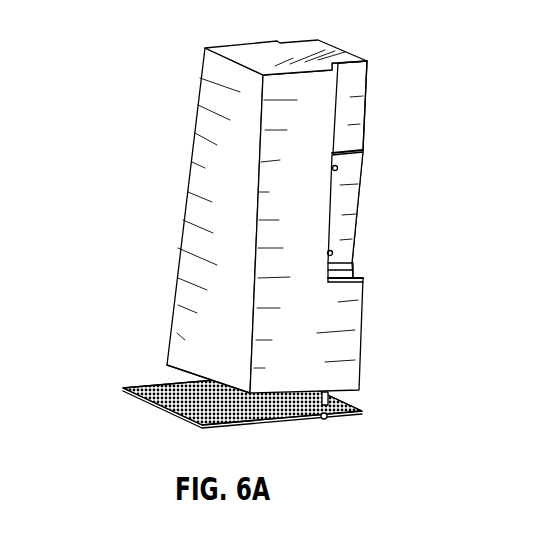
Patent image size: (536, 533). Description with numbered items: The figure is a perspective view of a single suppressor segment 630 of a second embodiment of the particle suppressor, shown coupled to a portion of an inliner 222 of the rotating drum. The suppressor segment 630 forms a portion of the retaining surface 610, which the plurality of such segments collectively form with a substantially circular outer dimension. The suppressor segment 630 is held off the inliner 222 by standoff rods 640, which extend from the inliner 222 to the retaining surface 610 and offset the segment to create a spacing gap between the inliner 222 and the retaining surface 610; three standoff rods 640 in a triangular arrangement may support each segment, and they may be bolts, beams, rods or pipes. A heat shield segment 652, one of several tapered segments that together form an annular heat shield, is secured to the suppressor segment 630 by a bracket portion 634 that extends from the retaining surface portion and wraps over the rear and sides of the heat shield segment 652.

The suppressor segment 630 is at (254, 232).
The heat shield segment 652 is at (353, 106).
The bracket portion 634 is at (353, 207).
The retaining surface 610 is at (182, 370).
The inliner 222 is at (157, 405).
The standoff rod 640 is at (330, 402).